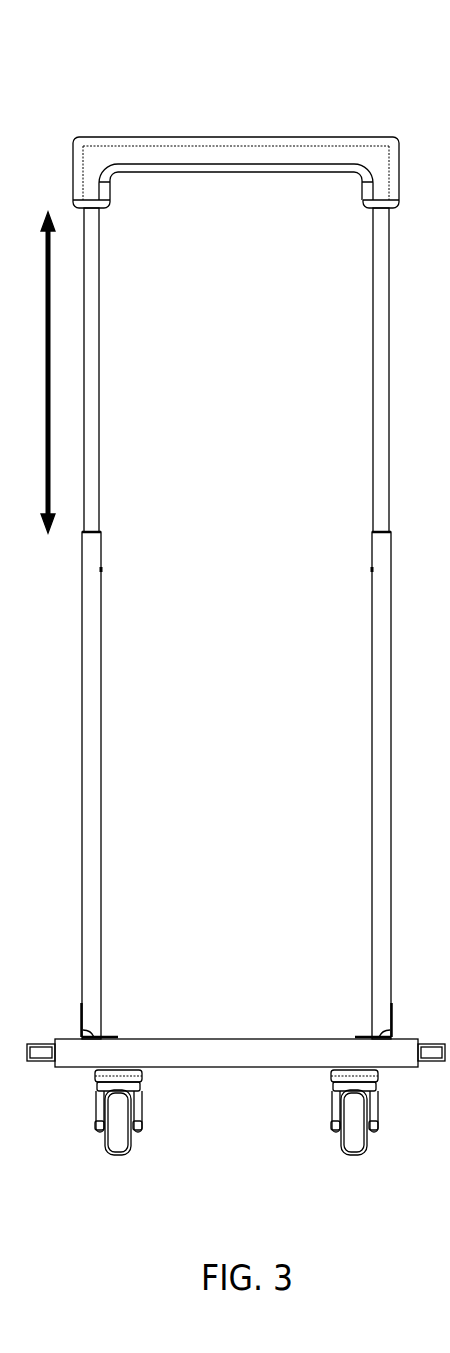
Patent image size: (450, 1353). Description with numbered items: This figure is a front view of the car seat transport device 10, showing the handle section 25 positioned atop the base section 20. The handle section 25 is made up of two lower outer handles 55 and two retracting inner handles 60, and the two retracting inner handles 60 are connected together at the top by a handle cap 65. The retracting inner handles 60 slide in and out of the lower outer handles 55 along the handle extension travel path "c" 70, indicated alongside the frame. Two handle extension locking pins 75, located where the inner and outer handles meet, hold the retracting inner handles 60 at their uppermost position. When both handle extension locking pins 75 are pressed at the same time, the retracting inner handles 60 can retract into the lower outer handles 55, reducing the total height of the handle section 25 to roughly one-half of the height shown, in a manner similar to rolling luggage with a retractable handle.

The device 10 is at (88, 118).
The base section 20 is at (240, 1052).
The handle section 25 is at (72, 210).
The lower outer handles 55 is at (90, 743).
The retracting inner handles 60 is at (90, 365).
The handle cap 65 is at (240, 140).
The handle extension travel path 70 is at (46, 288).
The handle extension locking pins 75 is at (90, 555).